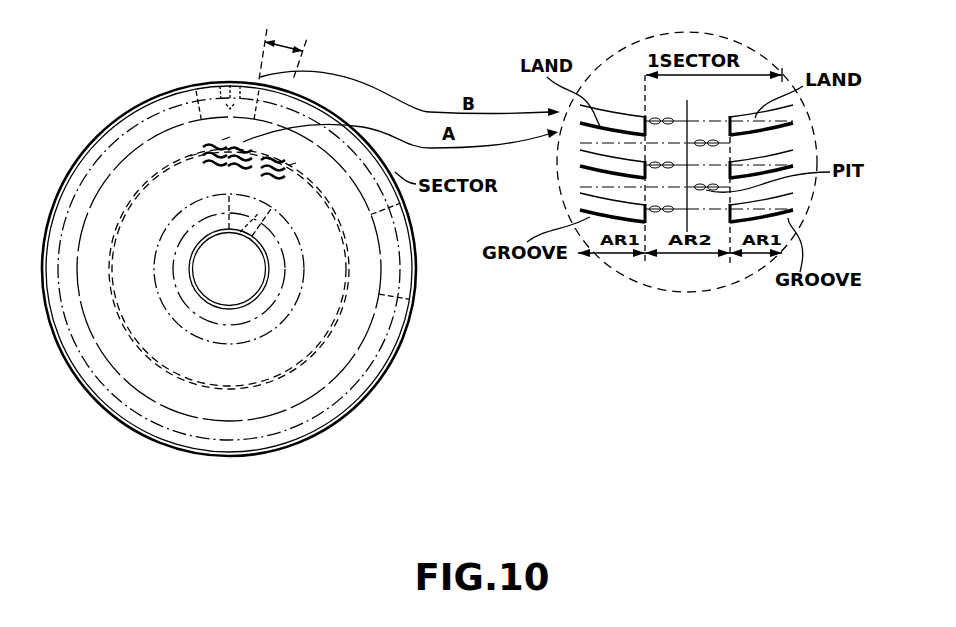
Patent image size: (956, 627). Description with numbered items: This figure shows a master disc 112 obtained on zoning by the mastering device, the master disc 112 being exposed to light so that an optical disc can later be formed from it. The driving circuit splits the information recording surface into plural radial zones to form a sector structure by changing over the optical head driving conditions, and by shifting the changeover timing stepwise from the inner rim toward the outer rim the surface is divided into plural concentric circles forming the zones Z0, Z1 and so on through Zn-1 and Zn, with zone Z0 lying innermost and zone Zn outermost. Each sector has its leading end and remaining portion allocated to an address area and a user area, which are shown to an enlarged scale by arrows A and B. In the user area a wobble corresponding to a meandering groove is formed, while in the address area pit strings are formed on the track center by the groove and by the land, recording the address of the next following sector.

The master disc 112 is at (393, 367).
The zone Zn-1 is at (380, 293).
The zone Zn is at (390, 332).
The zone Z1 is at (198, 327).
The zone Z0 is at (245, 322).